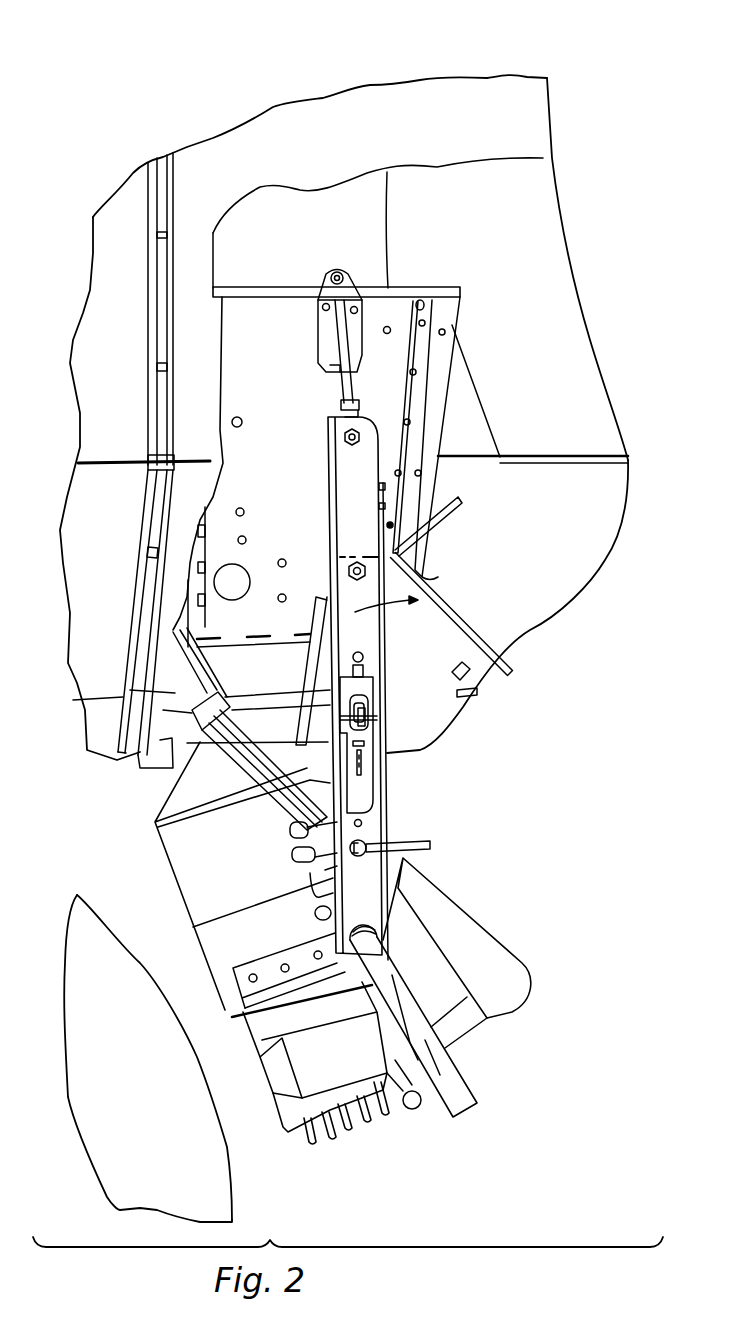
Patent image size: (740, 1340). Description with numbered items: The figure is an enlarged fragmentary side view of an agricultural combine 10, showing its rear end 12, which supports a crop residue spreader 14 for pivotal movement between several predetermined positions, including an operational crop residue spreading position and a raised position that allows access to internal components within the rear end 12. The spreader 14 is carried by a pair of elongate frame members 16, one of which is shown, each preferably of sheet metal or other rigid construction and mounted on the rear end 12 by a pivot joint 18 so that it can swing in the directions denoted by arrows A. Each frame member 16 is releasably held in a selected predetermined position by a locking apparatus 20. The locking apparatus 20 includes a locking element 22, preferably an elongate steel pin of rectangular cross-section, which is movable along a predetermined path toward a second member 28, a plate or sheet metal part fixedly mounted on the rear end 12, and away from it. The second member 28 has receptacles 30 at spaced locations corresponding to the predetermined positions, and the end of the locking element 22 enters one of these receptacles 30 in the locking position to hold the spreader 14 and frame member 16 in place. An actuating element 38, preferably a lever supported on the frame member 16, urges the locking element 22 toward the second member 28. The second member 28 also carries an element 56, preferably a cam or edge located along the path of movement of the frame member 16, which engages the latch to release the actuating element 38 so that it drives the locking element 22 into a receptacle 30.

The agricultural combine 10 is at (580, 68).
The rear end 12 is at (630, 436).
The crop residue spreader 14 is at (530, 963).
The frame member 16 is at (387, 625).
The pivot joint 18 is at (350, 560).
The locking apparatus 20 is at (382, 775).
The locking element 22 is at (375, 718).
The second member 28 is at (502, 666).
The receptacle 30 is at (478, 680).
The actuating element 38 is at (372, 810).
The cam element 56 is at (388, 753).
The pivotal movement direction arrows A is at (393, 601).